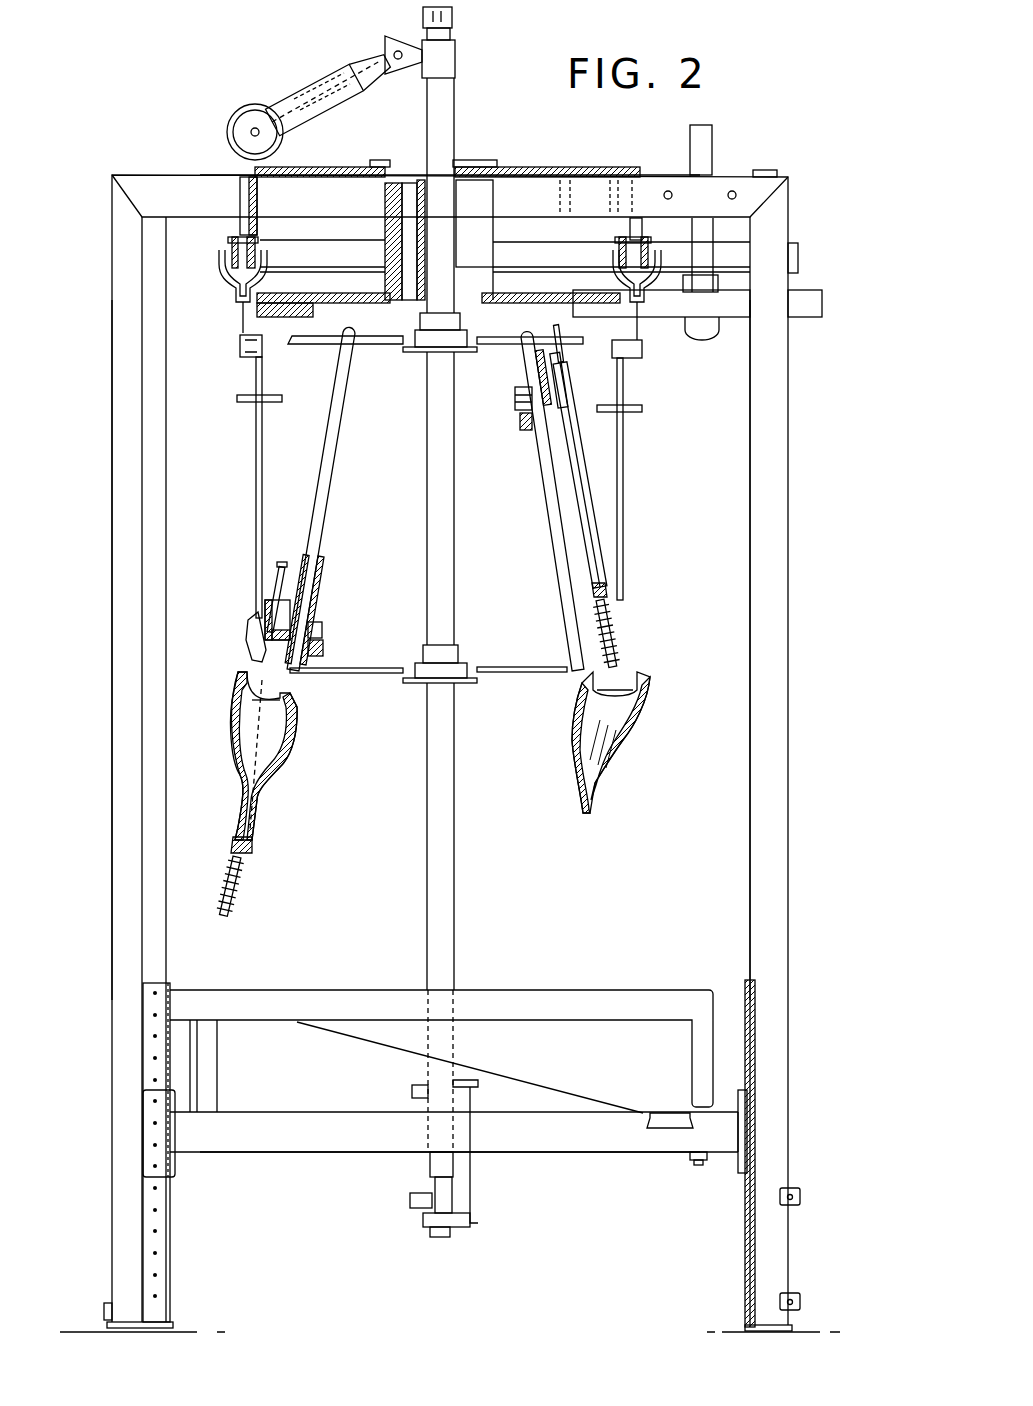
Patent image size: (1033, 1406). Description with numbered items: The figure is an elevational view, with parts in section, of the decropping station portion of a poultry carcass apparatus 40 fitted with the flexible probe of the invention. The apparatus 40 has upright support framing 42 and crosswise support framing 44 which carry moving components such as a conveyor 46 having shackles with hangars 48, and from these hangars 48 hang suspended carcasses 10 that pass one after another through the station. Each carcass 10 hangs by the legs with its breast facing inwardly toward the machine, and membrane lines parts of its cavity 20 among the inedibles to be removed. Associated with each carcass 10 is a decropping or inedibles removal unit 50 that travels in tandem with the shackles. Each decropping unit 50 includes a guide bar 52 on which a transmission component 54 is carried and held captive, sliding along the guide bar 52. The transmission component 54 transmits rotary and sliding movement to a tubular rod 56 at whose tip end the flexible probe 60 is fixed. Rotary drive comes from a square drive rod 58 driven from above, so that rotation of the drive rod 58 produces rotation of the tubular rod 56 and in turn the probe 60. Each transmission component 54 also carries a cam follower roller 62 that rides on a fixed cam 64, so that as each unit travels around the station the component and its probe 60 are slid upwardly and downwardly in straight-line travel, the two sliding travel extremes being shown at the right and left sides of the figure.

The carcass 10 is at (480, 756).
The cavity 20 is at (305, 736).
The poultry carcass apparatus 40 is at (439, 669).
The upright support framing 42 is at (118, 712).
The crosswise support framing 44 is at (165, 178).
The conveyor 46 is at (224, 290).
The hangar 48 is at (256, 468).
The decropping unit 50 is at (240, 615).
The guide bar 52 is at (333, 492).
The transmission component 54 is at (300, 627).
The tubular rod 56 is at (255, 826).
The square drive rod 58 is at (283, 567).
The flexible probe 60 is at (252, 879).
The cam follower roller 62 is at (325, 630).
The fixed cam 64 is at (325, 648).